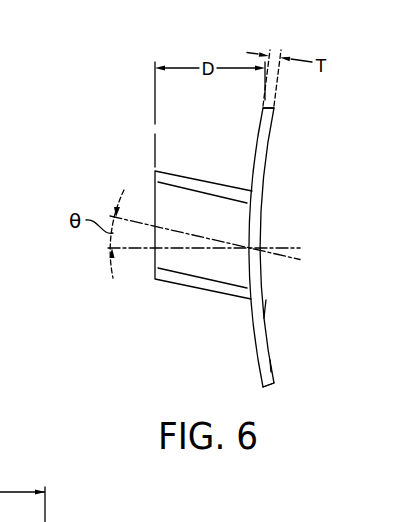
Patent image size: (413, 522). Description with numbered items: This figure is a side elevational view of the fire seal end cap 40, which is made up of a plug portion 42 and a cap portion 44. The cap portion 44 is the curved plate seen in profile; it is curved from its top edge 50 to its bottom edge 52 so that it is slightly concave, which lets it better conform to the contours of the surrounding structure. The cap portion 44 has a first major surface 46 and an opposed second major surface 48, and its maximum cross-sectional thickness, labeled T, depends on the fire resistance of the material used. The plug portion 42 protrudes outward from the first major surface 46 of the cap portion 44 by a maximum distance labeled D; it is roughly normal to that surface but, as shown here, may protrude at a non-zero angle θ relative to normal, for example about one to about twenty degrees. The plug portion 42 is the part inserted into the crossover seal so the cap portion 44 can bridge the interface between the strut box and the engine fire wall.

The fire seal end cap 40 is at (177, 200).
The plug portion 42 is at (207, 183).
The cap portion 44 is at (266, 168).
The first major surface 46 is at (257, 346).
The second major surface 48 is at (264, 318).
The top edge 50 is at (283, 243).
The bottom edge 52 is at (321, 351).